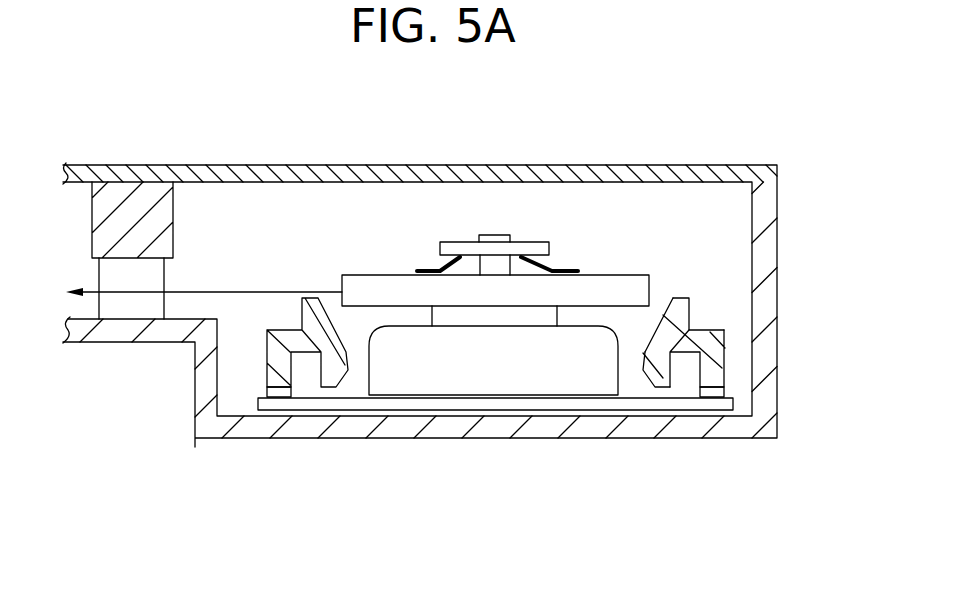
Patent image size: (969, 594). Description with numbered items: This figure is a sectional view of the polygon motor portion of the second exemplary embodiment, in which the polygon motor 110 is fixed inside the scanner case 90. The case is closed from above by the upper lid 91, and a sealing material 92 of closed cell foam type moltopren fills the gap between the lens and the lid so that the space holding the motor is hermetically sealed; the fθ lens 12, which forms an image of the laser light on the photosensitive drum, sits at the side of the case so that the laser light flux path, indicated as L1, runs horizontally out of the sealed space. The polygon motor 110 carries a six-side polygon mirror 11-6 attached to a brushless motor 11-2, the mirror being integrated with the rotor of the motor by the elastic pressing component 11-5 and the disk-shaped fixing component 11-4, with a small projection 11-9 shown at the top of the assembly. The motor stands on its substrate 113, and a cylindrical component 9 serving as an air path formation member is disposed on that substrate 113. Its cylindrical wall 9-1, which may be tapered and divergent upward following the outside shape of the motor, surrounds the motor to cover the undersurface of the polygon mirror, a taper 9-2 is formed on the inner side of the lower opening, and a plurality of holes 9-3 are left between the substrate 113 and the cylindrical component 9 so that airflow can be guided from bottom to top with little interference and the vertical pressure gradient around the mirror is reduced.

The scanner case 90 is at (778, 268).
The upper lid 91 is at (168, 166).
The sealing material 92 is at (109, 204).
The fθ lens 12 is at (121, 302).
The optical axis L1 is at (204, 276).
The polygon motor 110 is at (360, 246).
The six-side polygon mirror 11-6 is at (613, 283).
The brushless motor 11-2 is at (518, 375).
The disk-shaped fixing component 11-4 is at (542, 247).
The projection 11-9 is at (496, 236).
The elastic pressing component 11-5 is at (438, 270).
The substrate 113 is at (343, 402).
The cylindrical component 9 is at (707, 353).
The cylindrical wall 9-1 is at (667, 297).
The taper 9-2 is at (651, 377).
The holes 9-3 is at (709, 394).